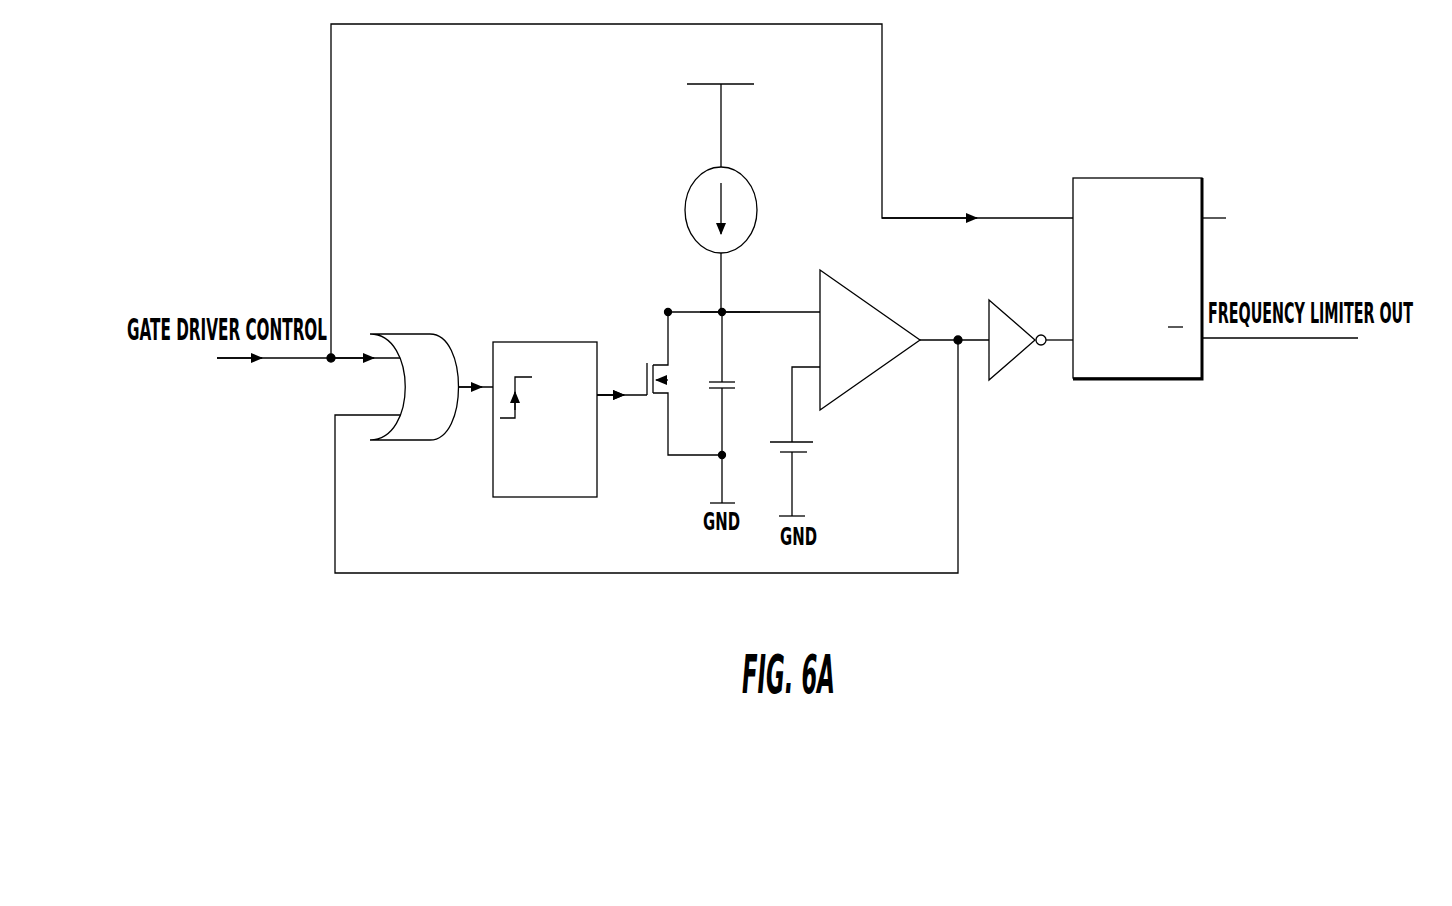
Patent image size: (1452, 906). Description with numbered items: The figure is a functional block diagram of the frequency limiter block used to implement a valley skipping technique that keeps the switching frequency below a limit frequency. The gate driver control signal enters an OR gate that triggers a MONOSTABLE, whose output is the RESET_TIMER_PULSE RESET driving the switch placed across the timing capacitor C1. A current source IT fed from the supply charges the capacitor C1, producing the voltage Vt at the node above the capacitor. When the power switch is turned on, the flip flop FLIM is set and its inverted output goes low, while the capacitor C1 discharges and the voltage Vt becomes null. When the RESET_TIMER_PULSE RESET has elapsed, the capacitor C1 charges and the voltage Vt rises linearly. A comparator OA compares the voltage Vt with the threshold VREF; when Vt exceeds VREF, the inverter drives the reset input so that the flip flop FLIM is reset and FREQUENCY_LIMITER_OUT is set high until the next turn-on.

The timer current source IT is at (707, 198).
The capacitor C1 is at (738, 407).
The voltage Vt is at (730, 294).
The comparator operational amplifier OA is at (872, 320).
The threshold VREF is at (823, 441).
The set/reset flip flop FLIM is at (1215, 259).
The monostable circuit MONOSTABLE is at (540, 403).
The RESET_TIMER_PULSE RESET is at (603, 406).